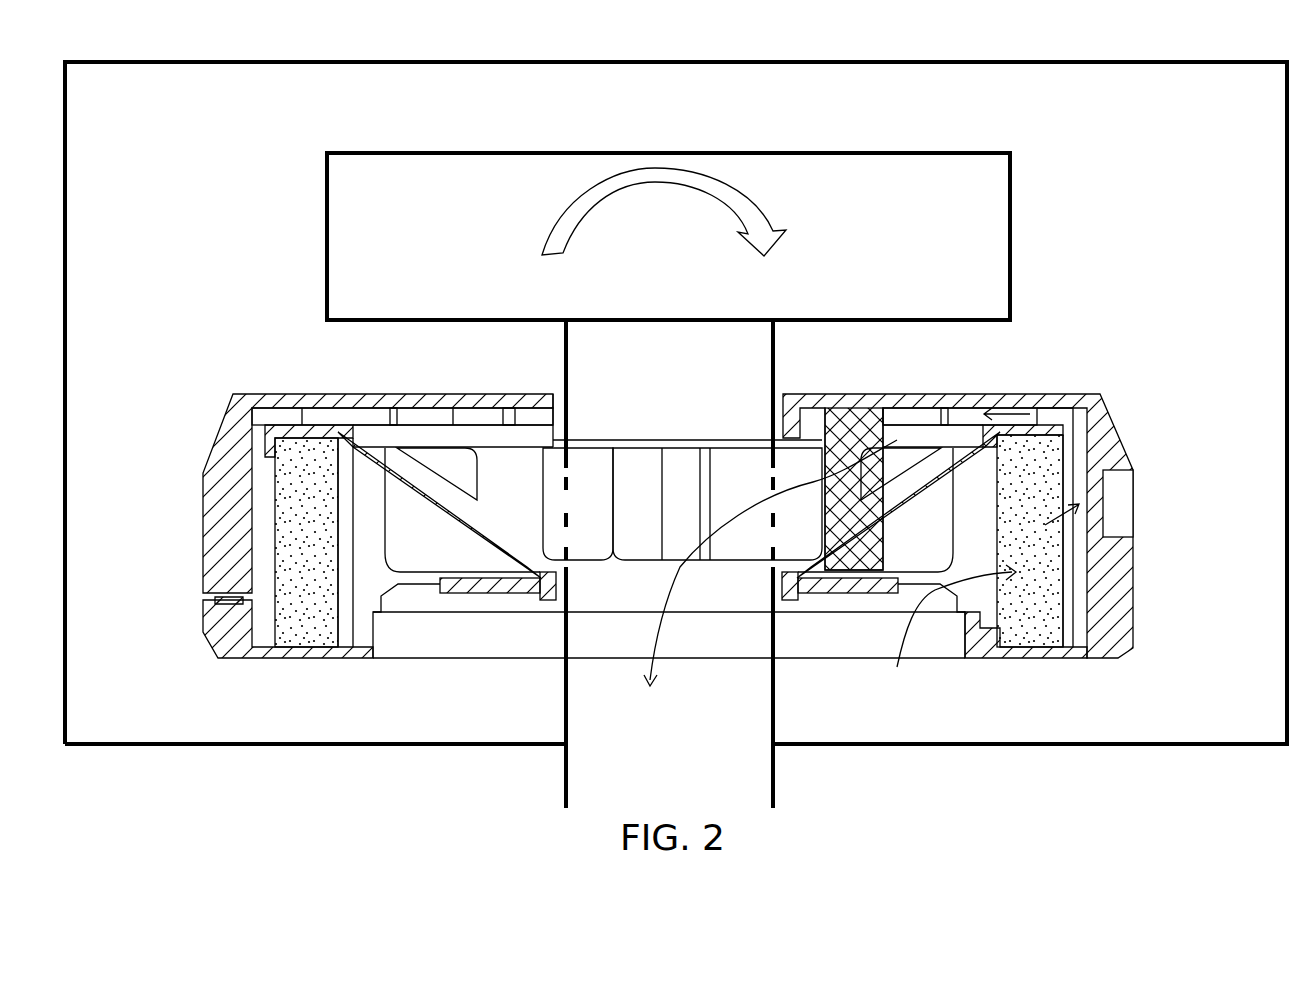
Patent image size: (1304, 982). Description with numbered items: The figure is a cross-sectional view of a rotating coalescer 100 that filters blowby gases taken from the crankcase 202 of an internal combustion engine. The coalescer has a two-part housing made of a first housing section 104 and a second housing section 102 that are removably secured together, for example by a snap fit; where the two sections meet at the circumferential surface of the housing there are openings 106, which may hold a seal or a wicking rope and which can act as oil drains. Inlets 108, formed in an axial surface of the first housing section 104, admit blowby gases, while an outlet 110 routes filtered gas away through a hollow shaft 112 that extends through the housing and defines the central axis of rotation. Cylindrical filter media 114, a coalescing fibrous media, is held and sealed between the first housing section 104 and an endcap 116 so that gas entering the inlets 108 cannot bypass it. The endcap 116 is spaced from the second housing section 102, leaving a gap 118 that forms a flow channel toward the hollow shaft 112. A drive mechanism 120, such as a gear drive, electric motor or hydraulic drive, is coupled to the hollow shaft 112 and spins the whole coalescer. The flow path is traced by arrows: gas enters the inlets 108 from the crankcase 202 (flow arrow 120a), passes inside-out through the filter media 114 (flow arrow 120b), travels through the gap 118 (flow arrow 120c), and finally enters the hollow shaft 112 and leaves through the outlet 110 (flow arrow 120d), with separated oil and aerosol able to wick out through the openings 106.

The rotating coalescer 100 is at (55, 92).
The crankcase 202 is at (163, 134).
The drive mechanism 120 is at (470, 232).
The second housing section 102 is at (237, 394).
The first housing section 104 is at (243, 655).
The openings 106 is at (237, 598).
The inlets 108 is at (400, 615).
The outlet 110 is at (637, 583).
The hollow shaft 112 is at (560, 374).
The filter media 114 is at (293, 550).
The endcap 116 is at (267, 430).
The gap 118 is at (322, 400).
The flow arrow 120a is at (915, 637).
The flow arrow 120b is at (1065, 512).
The flow arrow 120c is at (1002, 403).
The flow arrow 120d is at (870, 408).